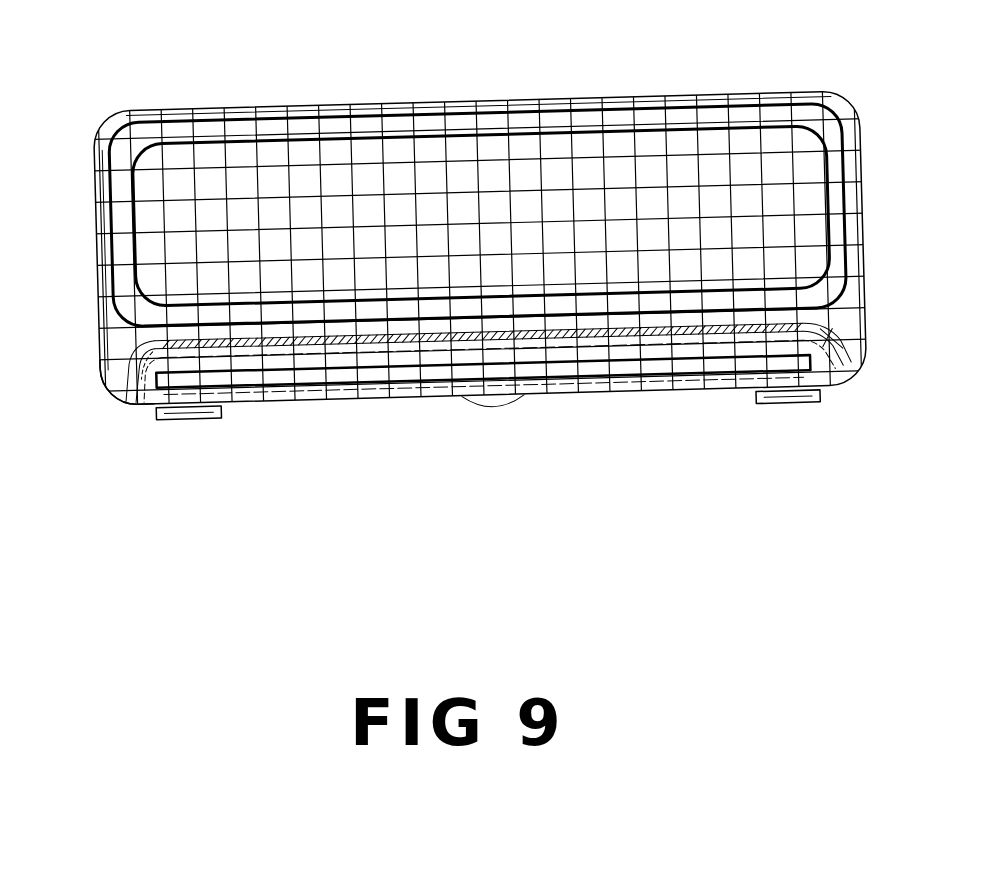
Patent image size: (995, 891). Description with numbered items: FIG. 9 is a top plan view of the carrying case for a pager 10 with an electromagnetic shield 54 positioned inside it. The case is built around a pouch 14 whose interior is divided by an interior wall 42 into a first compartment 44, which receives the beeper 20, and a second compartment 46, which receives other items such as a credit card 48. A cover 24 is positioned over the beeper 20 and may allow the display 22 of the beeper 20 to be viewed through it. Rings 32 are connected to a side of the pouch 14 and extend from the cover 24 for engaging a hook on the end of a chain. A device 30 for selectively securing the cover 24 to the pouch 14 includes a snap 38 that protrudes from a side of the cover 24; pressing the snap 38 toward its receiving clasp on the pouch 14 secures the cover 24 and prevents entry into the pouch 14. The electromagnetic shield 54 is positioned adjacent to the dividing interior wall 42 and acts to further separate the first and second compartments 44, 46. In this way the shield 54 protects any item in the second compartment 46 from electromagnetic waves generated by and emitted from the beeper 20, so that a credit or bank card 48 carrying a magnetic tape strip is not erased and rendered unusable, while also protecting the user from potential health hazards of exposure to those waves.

The carrying case for a pager 10 is at (140, 86).
The pouch 14 is at (93, 226).
The beeper 20 is at (312, 108).
The display 22 is at (689, 170).
The cover 24 is at (402, 165).
The device for securing the cover to the pouch 30 is at (470, 412).
The rings 32 is at (185, 422).
The snap 38 is at (504, 400).
The interior wall 42 is at (136, 356).
The first compartment 44 is at (92, 149).
The second compartment 46 is at (142, 402).
The credit card 48 is at (330, 378).
The electromagnetic shield 54 is at (842, 352).